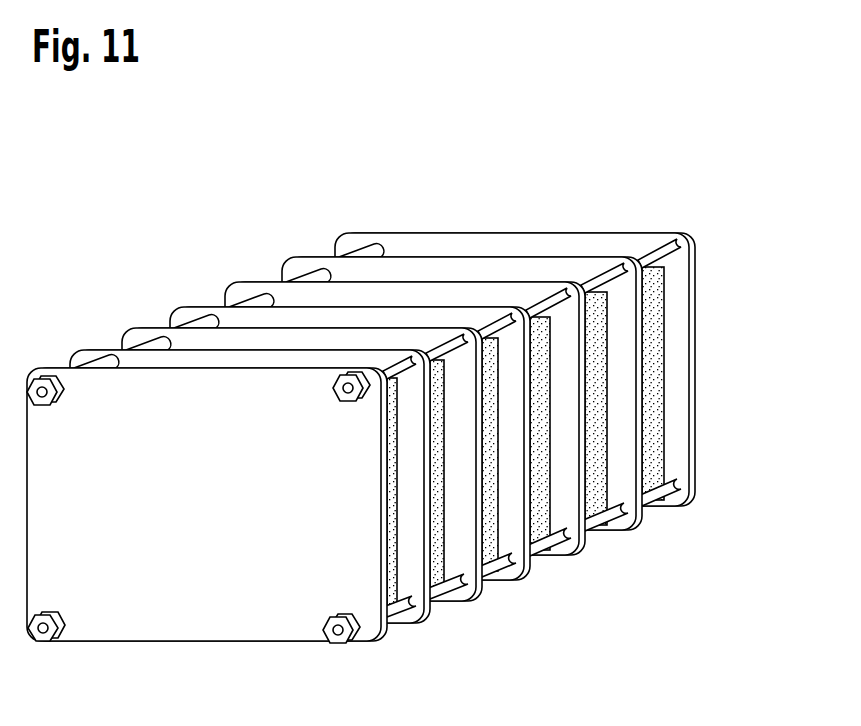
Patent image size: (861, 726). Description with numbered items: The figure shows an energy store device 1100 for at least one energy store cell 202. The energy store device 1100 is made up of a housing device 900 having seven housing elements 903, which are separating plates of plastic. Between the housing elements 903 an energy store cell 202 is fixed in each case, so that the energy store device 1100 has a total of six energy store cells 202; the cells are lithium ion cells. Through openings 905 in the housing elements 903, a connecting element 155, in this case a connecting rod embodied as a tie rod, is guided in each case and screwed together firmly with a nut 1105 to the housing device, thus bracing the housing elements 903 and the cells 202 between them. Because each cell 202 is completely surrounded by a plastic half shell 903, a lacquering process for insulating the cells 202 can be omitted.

The energy store device 1100 is at (222, 175).
The housing device 900 is at (476, 220).
The through openings 905 is at (617, 268).
The connecting element 155 is at (200, 327).
The energy store cell 202 is at (655, 327).
The housing element 903 is at (640, 395).
The nut 1105 is at (345, 643).